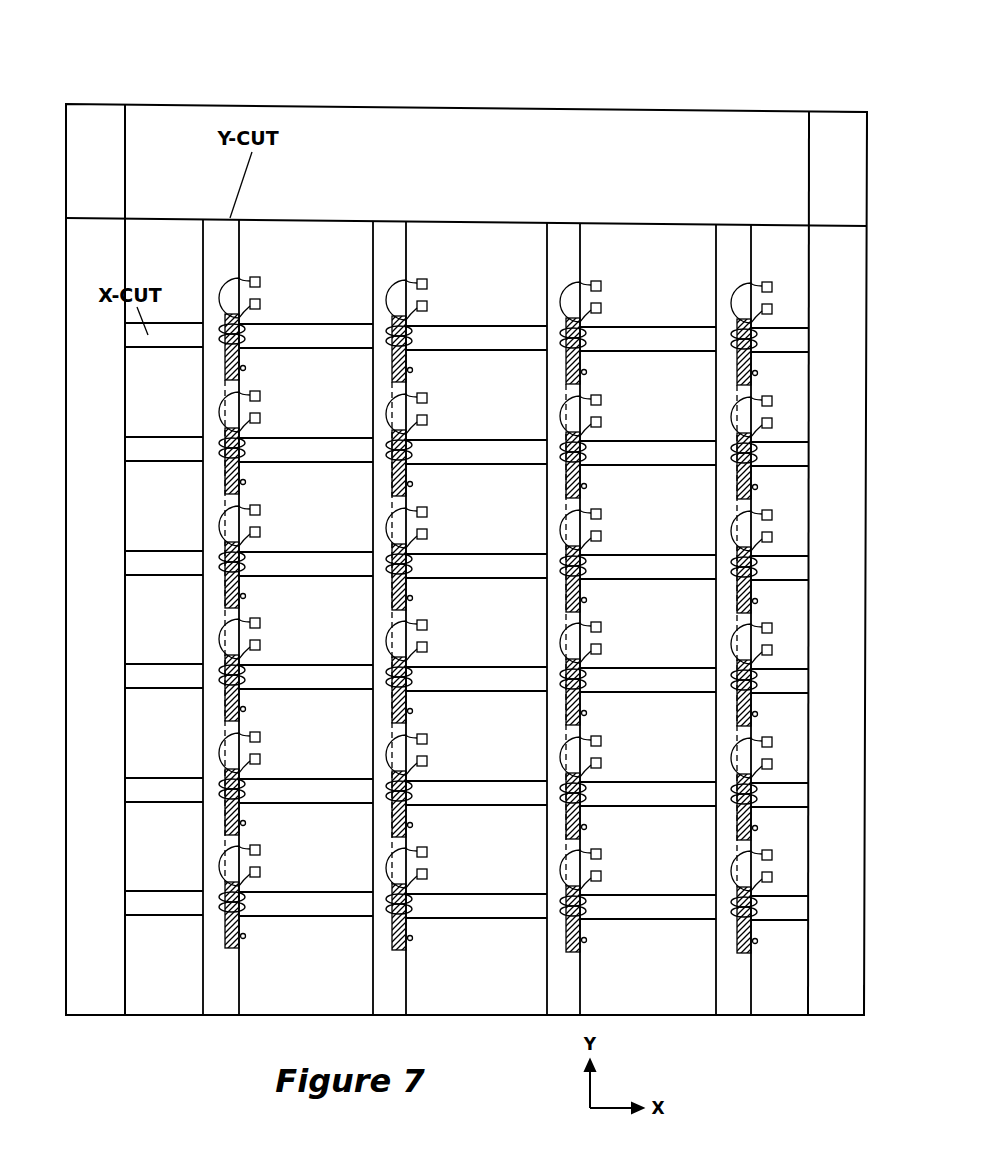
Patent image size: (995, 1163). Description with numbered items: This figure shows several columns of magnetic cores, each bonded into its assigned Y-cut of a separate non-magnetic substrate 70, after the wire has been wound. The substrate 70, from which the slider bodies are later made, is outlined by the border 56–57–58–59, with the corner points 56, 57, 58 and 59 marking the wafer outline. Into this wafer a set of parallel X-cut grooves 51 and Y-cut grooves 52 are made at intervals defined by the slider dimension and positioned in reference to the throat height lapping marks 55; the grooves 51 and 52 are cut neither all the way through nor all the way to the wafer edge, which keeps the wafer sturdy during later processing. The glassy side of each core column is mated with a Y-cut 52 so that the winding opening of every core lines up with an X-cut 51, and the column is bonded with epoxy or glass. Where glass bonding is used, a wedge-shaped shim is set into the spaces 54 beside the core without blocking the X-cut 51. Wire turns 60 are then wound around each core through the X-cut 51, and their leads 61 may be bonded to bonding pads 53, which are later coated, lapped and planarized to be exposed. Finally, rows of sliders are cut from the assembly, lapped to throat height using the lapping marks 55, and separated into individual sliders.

The substrate 70 is at (590, 89).
The border 56 is at (235, 948).
The border 57 is at (74, 1013).
The border 58 is at (856, 1013).
The border 59 is at (860, 114).
The Y-cut groove 52 is at (215, 213).
The X-cut groove 51 is at (119, 335).
The leads 61 is at (240, 313).
The bonding pads 53 is at (262, 307).
The wire turns 60 is at (245, 338).
The throat height lapping marks 55 is at (246, 371).
The spaces 54 is at (246, 484).